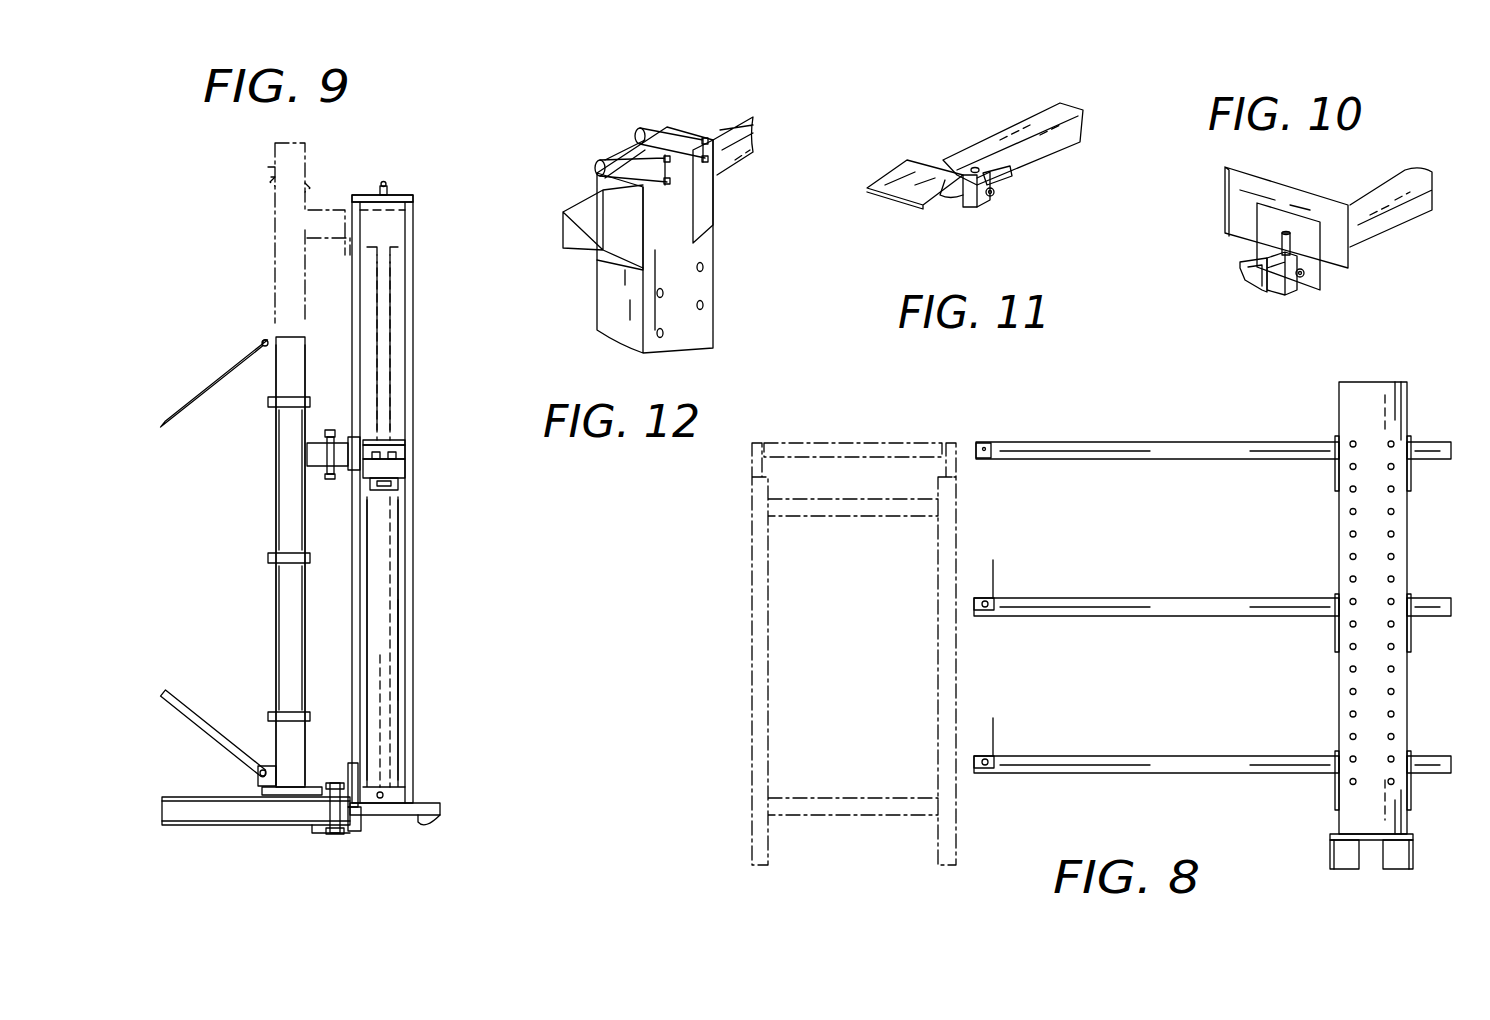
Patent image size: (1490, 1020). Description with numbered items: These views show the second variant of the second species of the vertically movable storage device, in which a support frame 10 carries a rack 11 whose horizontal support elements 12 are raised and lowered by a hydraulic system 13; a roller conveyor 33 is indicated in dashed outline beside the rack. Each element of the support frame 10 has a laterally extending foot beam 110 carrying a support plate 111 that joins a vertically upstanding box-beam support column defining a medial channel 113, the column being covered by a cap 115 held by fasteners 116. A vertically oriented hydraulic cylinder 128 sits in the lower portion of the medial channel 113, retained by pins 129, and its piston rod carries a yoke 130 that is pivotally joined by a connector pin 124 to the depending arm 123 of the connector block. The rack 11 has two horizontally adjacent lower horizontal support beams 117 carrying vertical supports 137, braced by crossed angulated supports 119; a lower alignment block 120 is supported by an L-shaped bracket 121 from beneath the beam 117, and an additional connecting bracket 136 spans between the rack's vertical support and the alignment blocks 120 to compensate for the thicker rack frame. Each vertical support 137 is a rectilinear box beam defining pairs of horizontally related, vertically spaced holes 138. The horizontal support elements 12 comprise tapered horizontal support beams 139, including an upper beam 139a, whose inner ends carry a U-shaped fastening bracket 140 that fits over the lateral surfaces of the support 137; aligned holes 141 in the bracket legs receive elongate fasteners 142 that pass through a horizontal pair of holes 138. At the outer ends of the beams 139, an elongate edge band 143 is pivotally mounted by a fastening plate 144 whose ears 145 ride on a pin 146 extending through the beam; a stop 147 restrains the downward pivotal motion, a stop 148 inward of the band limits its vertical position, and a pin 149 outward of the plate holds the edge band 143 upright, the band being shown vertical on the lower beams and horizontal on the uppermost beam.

In FIG. 9, the support frame 10 is at (395, 828).
In FIG. 9, the rack 11 is at (265, 487).
In FIG. 12, the rack 11 is at (585, 305).
In FIG. 8, the rack 11 is at (1408, 425).
In FIG. 9, the horizontal support elements 12 is at (413, 295).
In FIG. 12, the horizontal support elements 12 is at (740, 100).
In FIG. 11, the horizontal support elements 12 is at (972, 140).
In FIG. 10, the horizontal support elements 12 is at (1390, 245).
In FIG. 8, the horizontal support elements 12 is at (1180, 476).
In FIG. 9, the hydraulic system 13 is at (405, 630).
In FIG. 8, the roller conveyor 33 is at (865, 430).
In FIG. 9, the foot beam 110 is at (425, 820).
In FIG. 9, the support plate 111 is at (440, 810).
In FIG. 9, the medial channel 113 is at (384, 360).
In FIG. 9, the cap 115 is at (400, 195).
In FIG. 9, the fasteners 116 is at (383, 186).
In FIG. 9, the lower horizontal support beam 117 is at (240, 827).
In FIG. 8, the lower horizontal support beam 117 is at (1390, 870).
In FIG. 9, the angulated supports 119 is at (172, 410).
In FIG. 9, the lower alignment block 120 is at (350, 460).
In FIG. 9, the L-shaped bracket 121 is at (320, 826).
In FIG. 9, the depending arm 123 is at (380, 455).
In FIG. 9, the connector pin 124 is at (393, 472).
In FIG. 9, the hydraulic cylinder 128 is at (395, 440).
In FIG. 9, the pins 129 is at (385, 793).
In FIG. 9, the yoke 130 is at (392, 490).
In FIG. 9, the connecting bracket 136 is at (320, 445).
In FIG. 9, the vertical support 137 is at (272, 688).
In FIG. 8, the vertical support 137 is at (1375, 580).
In FIG. 12, the holes 138 is at (702, 303).
In FIG. 8, the holes 138 is at (1350, 579).
In FIG. 12, the horizontal support beam 139 is at (600, 215).
In FIG. 11, the horizontal support beam 139 is at (1080, 130).
In FIG. 10, the horizontal support beam 139 is at (1435, 178).
In FIG. 8, the horizontal support beam 139 is at (1110, 756).
In FIG. 8, the upper tube arm 139a is at (1075, 442).
In FIG. 9, the fastening bracket 140 is at (275, 583).
In FIG. 12, the fastening bracket 140 is at (650, 220).
In FIG. 8, the fastening bracket 140 is at (1405, 475).
In FIG. 12, the holes 141 is at (600, 160).
In FIG. 9, the elongate fasteners 142 is at (290, 553).
In FIG. 12, the elongate fasteners 142 is at (665, 135).
In FIG. 11, the edge band 143 is at (900, 185).
In FIG. 10, the edge band 143 is at (1240, 190).
In FIG. 8, the edge band 143 is at (995, 580).
In FIG. 11, the fastening plate 144 is at (968, 208).
In FIG. 10, the fastening plate 144 is at (1262, 222).
In FIG. 10, the ears 145 is at (1292, 293).
In FIG. 11, the pin 146 is at (992, 196).
In FIG. 10, the pin 146 is at (1305, 276).
In FIG. 11, the stop 147 is at (945, 195).
In FIG. 10, the stop 147 is at (1250, 280).
In FIG. 11, the stop 148 is at (1005, 172).
In FIG. 10, the pin 149 is at (1286, 233).